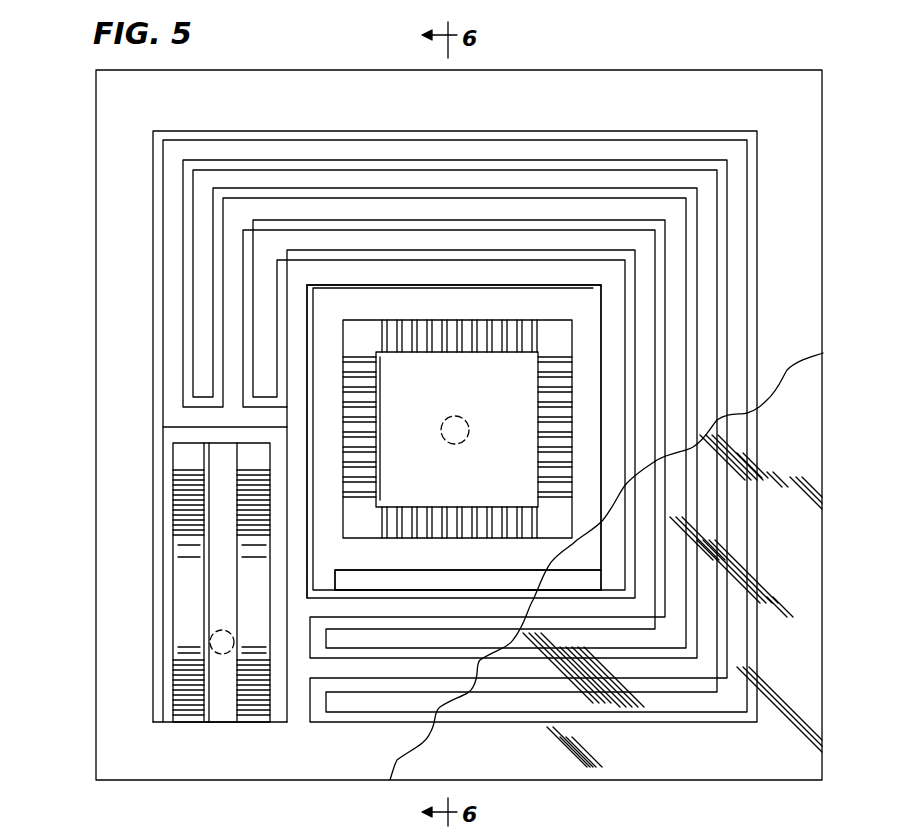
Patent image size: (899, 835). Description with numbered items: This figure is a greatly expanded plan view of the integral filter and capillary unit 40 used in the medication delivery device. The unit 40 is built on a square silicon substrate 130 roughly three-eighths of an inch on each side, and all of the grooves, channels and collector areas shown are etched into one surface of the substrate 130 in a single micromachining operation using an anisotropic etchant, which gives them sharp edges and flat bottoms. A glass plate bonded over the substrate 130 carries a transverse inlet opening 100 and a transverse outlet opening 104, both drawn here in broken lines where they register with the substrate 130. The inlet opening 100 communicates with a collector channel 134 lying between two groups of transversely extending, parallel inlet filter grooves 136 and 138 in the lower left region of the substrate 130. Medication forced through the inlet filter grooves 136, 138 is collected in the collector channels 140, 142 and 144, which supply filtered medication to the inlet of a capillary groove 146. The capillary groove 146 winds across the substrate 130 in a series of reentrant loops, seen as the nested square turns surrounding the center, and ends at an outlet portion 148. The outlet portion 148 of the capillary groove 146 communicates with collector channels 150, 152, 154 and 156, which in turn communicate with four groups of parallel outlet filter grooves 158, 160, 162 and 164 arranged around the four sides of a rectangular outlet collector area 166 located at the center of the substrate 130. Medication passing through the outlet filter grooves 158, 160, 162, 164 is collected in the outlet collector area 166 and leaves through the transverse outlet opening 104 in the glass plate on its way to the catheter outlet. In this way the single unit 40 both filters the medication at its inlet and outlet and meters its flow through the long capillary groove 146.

The integral filter and capillary unit 40 is at (822, 238).
The inlet opening 100 is at (215, 637).
The outlet opening 104 is at (457, 429).
The silicon substrate 130 is at (800, 172).
The collector channel 134 is at (222, 712).
The inlet filter grooves 136 is at (190, 718).
The inlet filter grooves 138 is at (262, 718).
The collector channel 140 is at (170, 690).
The collector channel 142 is at (287, 712).
The collector channel 144 is at (172, 436).
The capillary groove 146 is at (162, 352).
The outlet portion 148 is at (340, 597).
The collector channel 150 is at (327, 476).
The collector channel 152 is at (390, 305).
The collector channel 154 is at (585, 345).
The collector channel 156 is at (515, 557).
The outlet filter grooves 158 is at (353, 420).
The outlet filter grooves 160 is at (430, 337).
The outlet filter grooves 162 is at (555, 410).
The outlet filter grooves 164 is at (430, 518).
The outlet collector area 166 is at (505, 363).